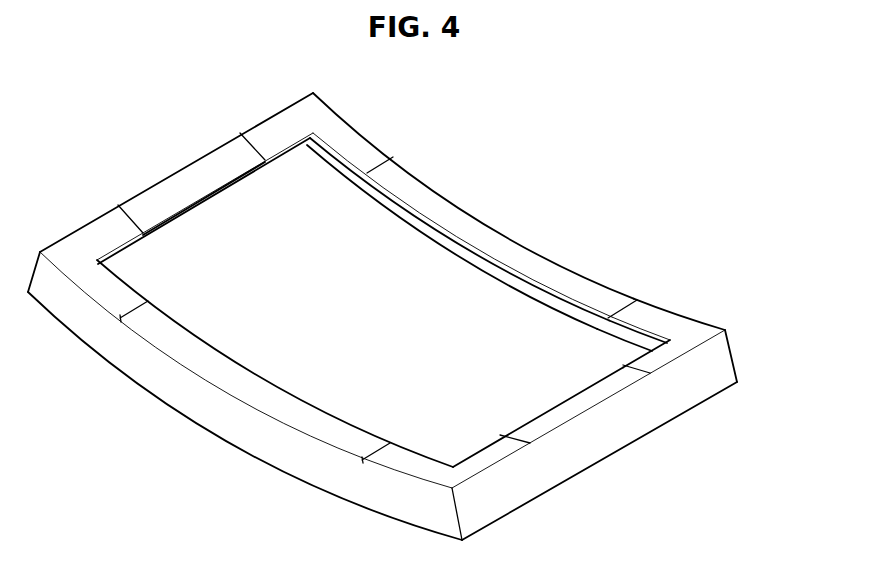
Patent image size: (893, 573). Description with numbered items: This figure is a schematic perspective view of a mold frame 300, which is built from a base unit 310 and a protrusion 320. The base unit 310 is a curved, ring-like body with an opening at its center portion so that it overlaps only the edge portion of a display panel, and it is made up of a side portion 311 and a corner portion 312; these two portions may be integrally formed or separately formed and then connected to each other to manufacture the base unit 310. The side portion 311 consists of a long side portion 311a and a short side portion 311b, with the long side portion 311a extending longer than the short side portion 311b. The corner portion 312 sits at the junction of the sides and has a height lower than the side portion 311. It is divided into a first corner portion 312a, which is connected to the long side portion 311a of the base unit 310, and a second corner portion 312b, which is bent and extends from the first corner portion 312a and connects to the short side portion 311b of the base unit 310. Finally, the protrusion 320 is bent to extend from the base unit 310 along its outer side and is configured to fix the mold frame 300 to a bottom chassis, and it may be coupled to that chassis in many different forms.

The mold frame 300 is at (88, 91).
The base unit 310 is at (416, 281).
The side portion 311 is at (478, 290).
The long side portion 311a is at (498, 247).
The short side portion 311b is at (572, 403).
The corner portion 312 is at (695, 247).
The first corner portion 312a is at (652, 320).
The second corner portion 312b is at (663, 355).
The protrusion 320 is at (597, 438).